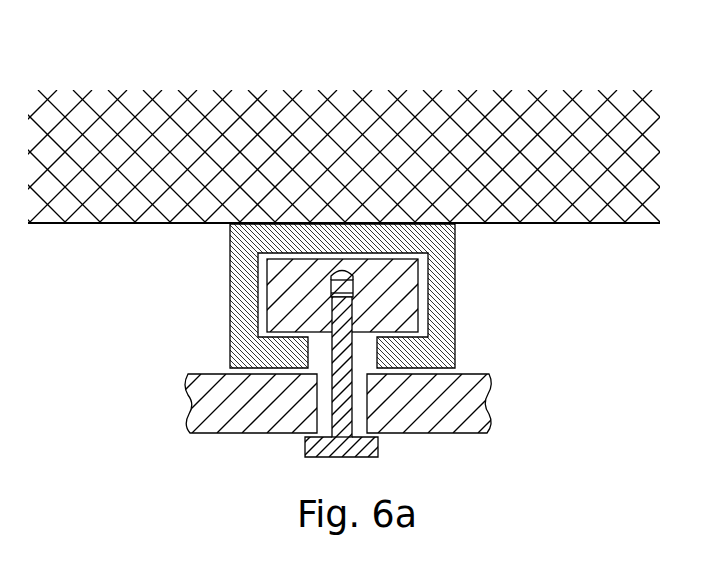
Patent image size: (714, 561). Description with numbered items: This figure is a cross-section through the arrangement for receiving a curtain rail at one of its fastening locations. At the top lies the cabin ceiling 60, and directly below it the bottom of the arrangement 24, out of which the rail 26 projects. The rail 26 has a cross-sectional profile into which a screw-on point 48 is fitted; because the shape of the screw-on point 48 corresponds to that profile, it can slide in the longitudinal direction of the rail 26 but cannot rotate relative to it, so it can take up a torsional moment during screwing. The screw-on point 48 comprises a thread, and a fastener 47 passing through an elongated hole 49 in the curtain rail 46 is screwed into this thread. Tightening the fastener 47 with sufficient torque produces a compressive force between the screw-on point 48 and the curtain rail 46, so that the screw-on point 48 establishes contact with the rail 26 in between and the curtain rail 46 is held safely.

The cabin ceiling 60 is at (197, 135).
The bottom of the arrangement 24 is at (81, 225).
The rail 26 is at (442, 283).
The screw-on point 48 is at (280, 283).
The elongated holes 49 is at (362, 422).
The fasteners 47 is at (307, 445).
The curtain rail 46 is at (207, 414).